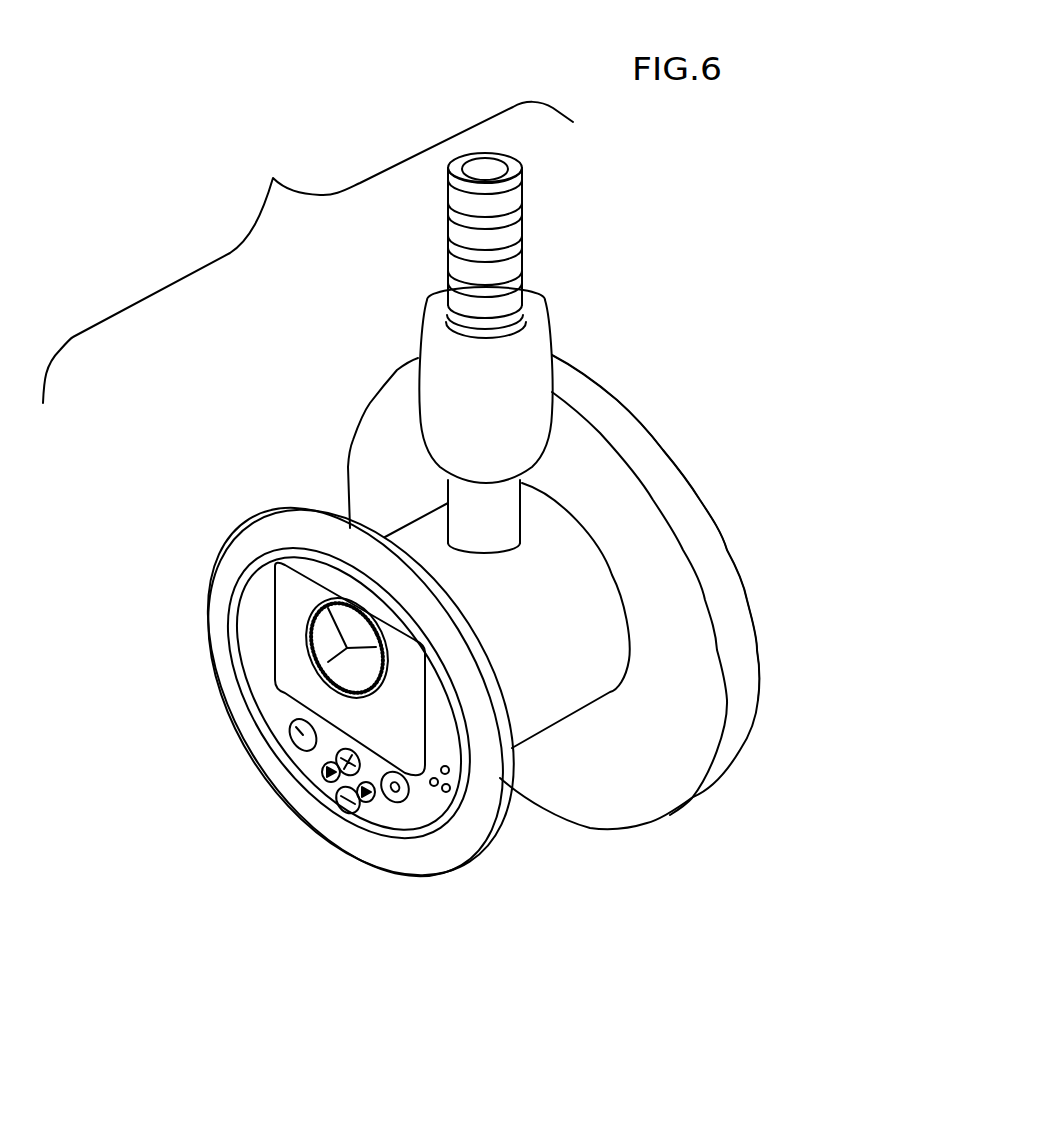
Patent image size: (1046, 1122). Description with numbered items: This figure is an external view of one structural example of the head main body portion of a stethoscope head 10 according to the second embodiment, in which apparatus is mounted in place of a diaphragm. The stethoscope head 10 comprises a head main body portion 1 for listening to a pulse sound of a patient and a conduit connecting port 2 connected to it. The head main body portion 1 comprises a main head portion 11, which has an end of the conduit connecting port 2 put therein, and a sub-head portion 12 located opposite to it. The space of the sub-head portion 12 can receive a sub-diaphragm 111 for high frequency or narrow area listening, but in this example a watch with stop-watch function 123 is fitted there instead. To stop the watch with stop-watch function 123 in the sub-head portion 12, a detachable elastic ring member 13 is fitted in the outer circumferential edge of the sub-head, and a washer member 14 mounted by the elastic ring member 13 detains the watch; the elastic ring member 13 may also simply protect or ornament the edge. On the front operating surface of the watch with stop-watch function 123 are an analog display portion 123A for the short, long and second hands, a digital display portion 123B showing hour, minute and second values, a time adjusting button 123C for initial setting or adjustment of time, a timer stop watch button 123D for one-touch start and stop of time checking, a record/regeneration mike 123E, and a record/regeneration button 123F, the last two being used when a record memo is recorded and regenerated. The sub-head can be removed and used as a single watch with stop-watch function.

The head main body portion 1 is at (350, 711).
The conduit connecting port 2 is at (513, 240).
The stethoscope head 10 is at (308, 252).
The main head portion 11 is at (660, 783).
The sub-head portion 12 is at (490, 678).
The elastic ring member 13 is at (243, 554).
The washer member 14 is at (300, 548).
The sub-diaphragm 111 is at (715, 563).
The watch with stop-watch function 123 is at (383, 813).
The analog display portion 123A is at (298, 646).
The digital display portion 123B is at (298, 696).
The time adjusting button 123C is at (328, 795).
The timer stop watch button 123D is at (300, 742).
The record/regeneration mike 123E is at (400, 797).
The record/regeneration button 123F is at (452, 795).